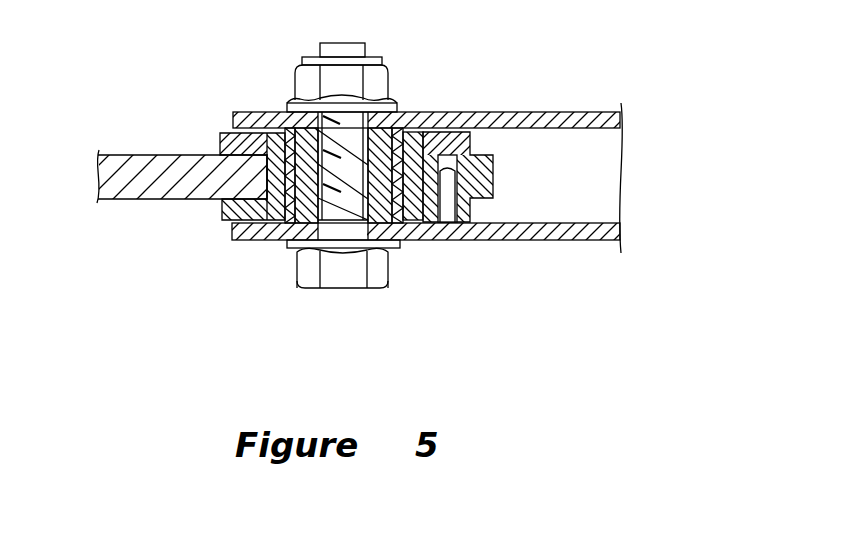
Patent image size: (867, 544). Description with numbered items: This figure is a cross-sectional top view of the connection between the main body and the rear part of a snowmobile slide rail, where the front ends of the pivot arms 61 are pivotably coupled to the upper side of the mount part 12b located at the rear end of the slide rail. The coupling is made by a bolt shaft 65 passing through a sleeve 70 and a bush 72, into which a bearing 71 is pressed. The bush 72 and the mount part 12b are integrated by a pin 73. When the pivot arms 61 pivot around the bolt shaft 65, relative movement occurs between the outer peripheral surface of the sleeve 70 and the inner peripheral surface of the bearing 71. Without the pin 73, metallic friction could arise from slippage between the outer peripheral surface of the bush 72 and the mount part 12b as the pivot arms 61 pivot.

The pivot arms 61 is at (528, 112).
The mount part 12b is at (117, 199).
The bush 72 is at (227, 212).
The sleeve 70 is at (380, 215).
The bearing 71 is at (290, 244).
The pin 73 is at (447, 205).
The bolt shaft 65 is at (340, 277).